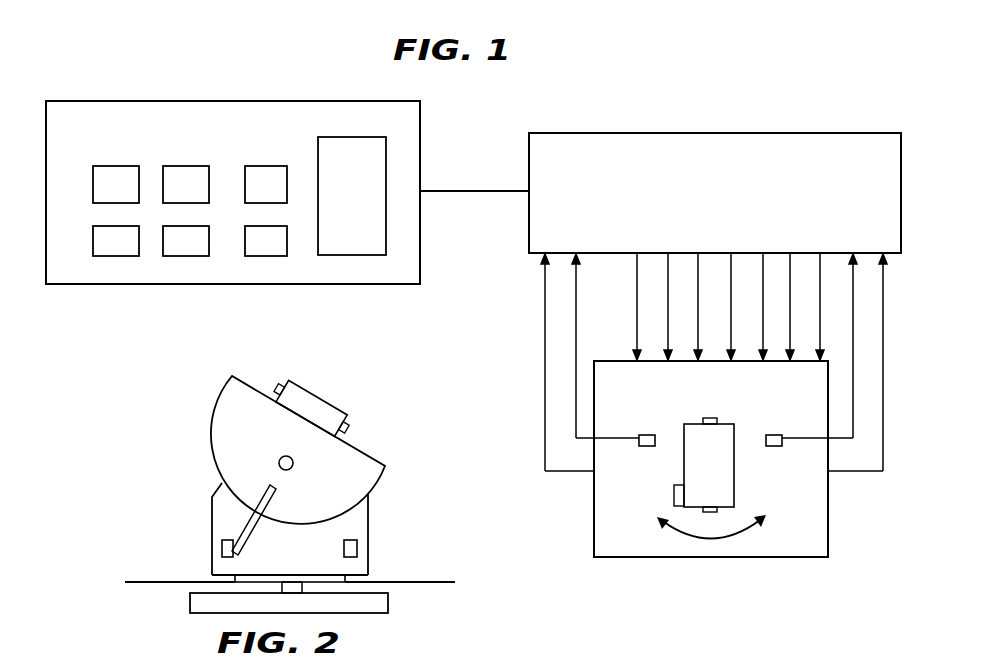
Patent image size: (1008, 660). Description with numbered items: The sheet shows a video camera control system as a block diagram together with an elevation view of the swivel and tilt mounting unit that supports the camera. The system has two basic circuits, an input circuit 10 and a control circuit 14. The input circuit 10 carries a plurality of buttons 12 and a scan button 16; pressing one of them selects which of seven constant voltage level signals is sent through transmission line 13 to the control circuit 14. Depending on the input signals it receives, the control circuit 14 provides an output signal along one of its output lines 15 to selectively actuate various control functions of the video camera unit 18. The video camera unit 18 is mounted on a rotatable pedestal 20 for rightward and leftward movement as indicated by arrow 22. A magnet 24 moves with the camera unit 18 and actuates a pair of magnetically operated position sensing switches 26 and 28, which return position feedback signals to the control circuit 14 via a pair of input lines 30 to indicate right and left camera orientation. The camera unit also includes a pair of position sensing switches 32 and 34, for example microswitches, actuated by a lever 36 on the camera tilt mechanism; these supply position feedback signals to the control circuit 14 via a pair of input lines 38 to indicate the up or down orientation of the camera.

In FIG. 1, the input circuit 10 is at (232, 106).
In FIG. 1, the buttons 12 is at (92, 182).
In FIG. 1, the transmission line 13 is at (480, 193).
In FIG. 1, the control circuit 14 is at (707, 133).
In FIG. 1, the output lines 15 is at (668, 333).
In FIG. 1, the scan button 16 is at (387, 160).
In FIG. 1, the video camera unit 18 is at (725, 494).
In FIG. 2, the video camera unit 18 is at (320, 405).
In FIG. 1, the rotatable pedestal 20 is at (711, 459).
In FIG. 2, the rotatable pedestal 20 is at (357, 525).
In FIG. 1, the arrow 22 is at (680, 538).
In FIG. 1, the magnet 24 is at (674, 492).
In FIG. 1, the position sensing switch 26 is at (650, 434).
In FIG. 1, the position sensing switch 28 is at (776, 434).
In FIG. 1, the input lines 30 is at (853, 311).
In FIG. 2, the position sensing switch 32 is at (222, 548).
In FIG. 2, the position sensing switch 34 is at (357, 548).
In FIG. 2, the lever 36 is at (248, 540).
In FIG. 1, the input lines 38 is at (545, 313).
In FIG. 2, the input lines 38 is at (160, 583).